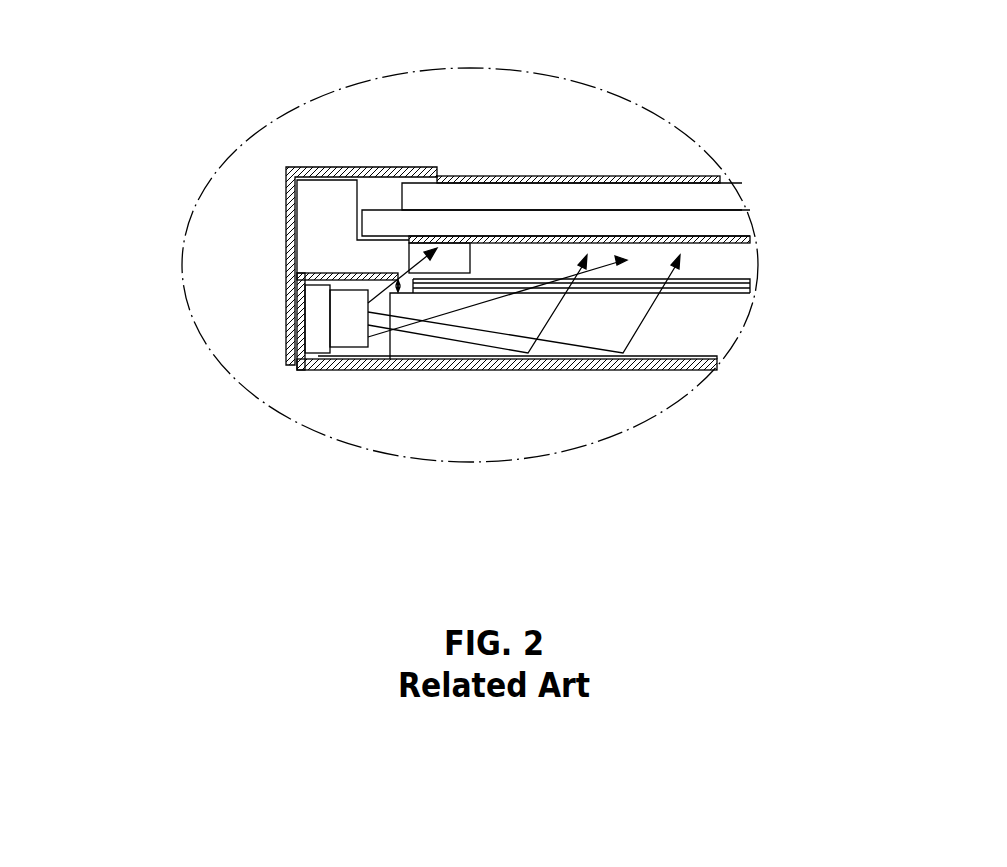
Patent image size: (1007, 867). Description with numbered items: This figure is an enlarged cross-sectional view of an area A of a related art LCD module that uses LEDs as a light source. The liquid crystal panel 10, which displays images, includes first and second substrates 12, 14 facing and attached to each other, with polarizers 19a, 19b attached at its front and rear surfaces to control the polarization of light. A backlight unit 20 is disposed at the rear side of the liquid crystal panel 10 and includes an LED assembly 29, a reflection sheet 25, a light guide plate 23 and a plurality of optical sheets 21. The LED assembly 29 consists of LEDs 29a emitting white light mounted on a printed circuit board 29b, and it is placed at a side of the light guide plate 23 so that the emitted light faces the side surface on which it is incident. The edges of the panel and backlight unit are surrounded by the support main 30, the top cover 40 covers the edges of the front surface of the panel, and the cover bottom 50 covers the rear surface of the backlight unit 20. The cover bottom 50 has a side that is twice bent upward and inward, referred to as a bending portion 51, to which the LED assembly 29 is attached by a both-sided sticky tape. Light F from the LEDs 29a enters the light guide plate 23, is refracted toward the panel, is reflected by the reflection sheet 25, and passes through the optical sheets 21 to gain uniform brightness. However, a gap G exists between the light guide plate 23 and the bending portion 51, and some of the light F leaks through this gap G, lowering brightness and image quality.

The liquid crystal panel 10 is at (615, 134).
The first substrate 12 is at (668, 220).
The second substrate 14 is at (620, 197).
The polarizer 19a is at (748, 240).
The polarizer 19b is at (720, 180).
The backlight unit 20 is at (494, 447).
The optical sheets 21 is at (562, 285).
The light guide plate 23 is at (475, 337).
The reflection sheet 25 is at (645, 358).
The LED assembly 29 is at (310, 413).
The LEDs 29a is at (348, 318).
The printed circuit board 29b is at (320, 328).
The support main 30 is at (303, 238).
The top cover 40 is at (312, 173).
The cover bottom 50 is at (695, 366).
The bending portion 51 is at (323, 256).
The area A is at (237, 382).
The light F is at (524, 300).
The gap G is at (404, 285).